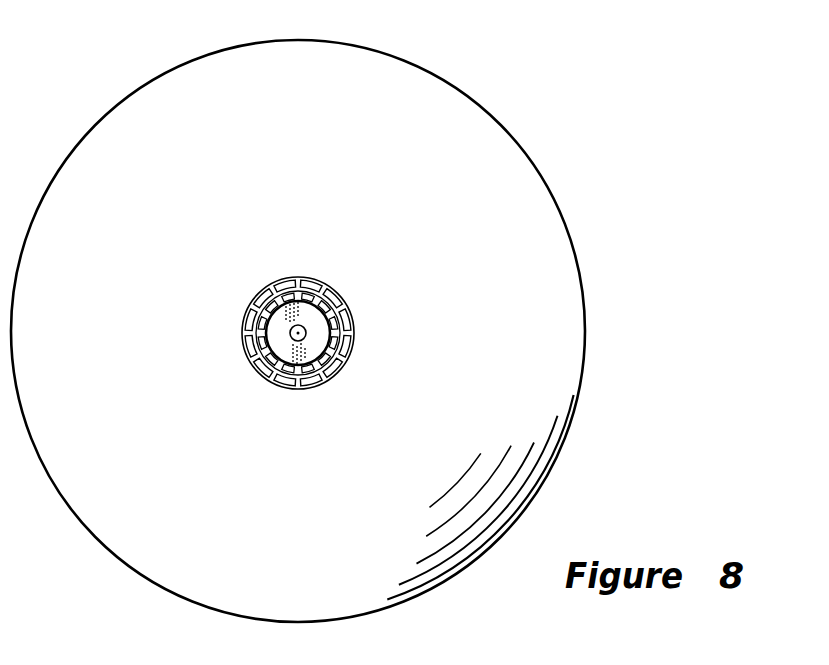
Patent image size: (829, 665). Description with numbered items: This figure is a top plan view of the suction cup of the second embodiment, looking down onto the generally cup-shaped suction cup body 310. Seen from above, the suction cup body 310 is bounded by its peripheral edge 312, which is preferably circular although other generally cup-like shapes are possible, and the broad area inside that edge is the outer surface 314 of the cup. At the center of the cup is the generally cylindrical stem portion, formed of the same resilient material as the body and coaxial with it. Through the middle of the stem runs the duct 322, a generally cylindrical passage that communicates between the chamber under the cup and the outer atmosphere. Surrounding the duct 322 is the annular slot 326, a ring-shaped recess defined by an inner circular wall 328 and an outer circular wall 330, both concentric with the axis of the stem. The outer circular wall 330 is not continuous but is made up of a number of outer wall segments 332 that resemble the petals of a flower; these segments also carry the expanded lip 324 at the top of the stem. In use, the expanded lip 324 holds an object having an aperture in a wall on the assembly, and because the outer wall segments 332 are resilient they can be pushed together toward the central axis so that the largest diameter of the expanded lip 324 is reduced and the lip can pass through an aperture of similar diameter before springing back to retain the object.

The suction cup body 310 is at (470, 84).
The peripheral edge 312 is at (550, 191).
The outer surface 314 is at (482, 281).
The duct 322 is at (323, 368).
The expanded lip 324 is at (285, 277).
The annular slot 326 is at (298, 333).
The inner circular wall 328 is at (345, 320).
The outer circular wall 330 is at (343, 327).
The outer wall segments 332 is at (305, 392).